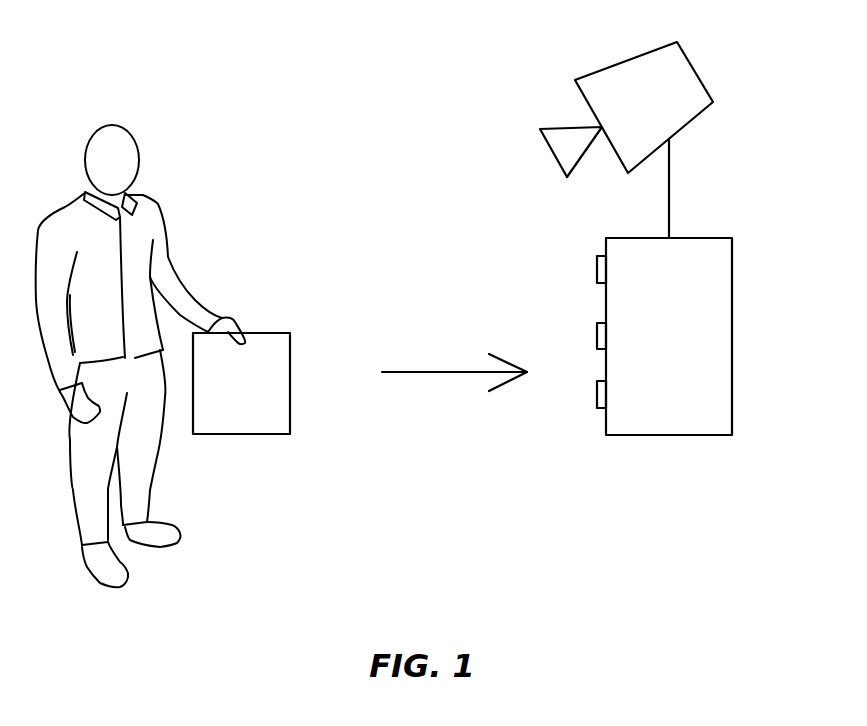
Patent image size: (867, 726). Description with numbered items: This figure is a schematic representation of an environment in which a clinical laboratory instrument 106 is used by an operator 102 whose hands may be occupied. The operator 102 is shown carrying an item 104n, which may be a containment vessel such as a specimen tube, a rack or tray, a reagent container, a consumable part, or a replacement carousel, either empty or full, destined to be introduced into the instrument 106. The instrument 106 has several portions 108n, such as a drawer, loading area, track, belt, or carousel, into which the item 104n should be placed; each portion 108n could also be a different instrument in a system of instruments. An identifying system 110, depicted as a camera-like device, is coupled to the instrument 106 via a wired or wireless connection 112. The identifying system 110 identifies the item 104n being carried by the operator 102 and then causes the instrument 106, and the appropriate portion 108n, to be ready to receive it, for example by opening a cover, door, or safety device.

The operator 102 is at (160, 207).
The item 104n is at (241, 383).
The instrument 106 is at (669, 336).
The portion 108n is at (597, 268).
The identifying system 110 is at (626, 109).
The connection 112 is at (672, 193).